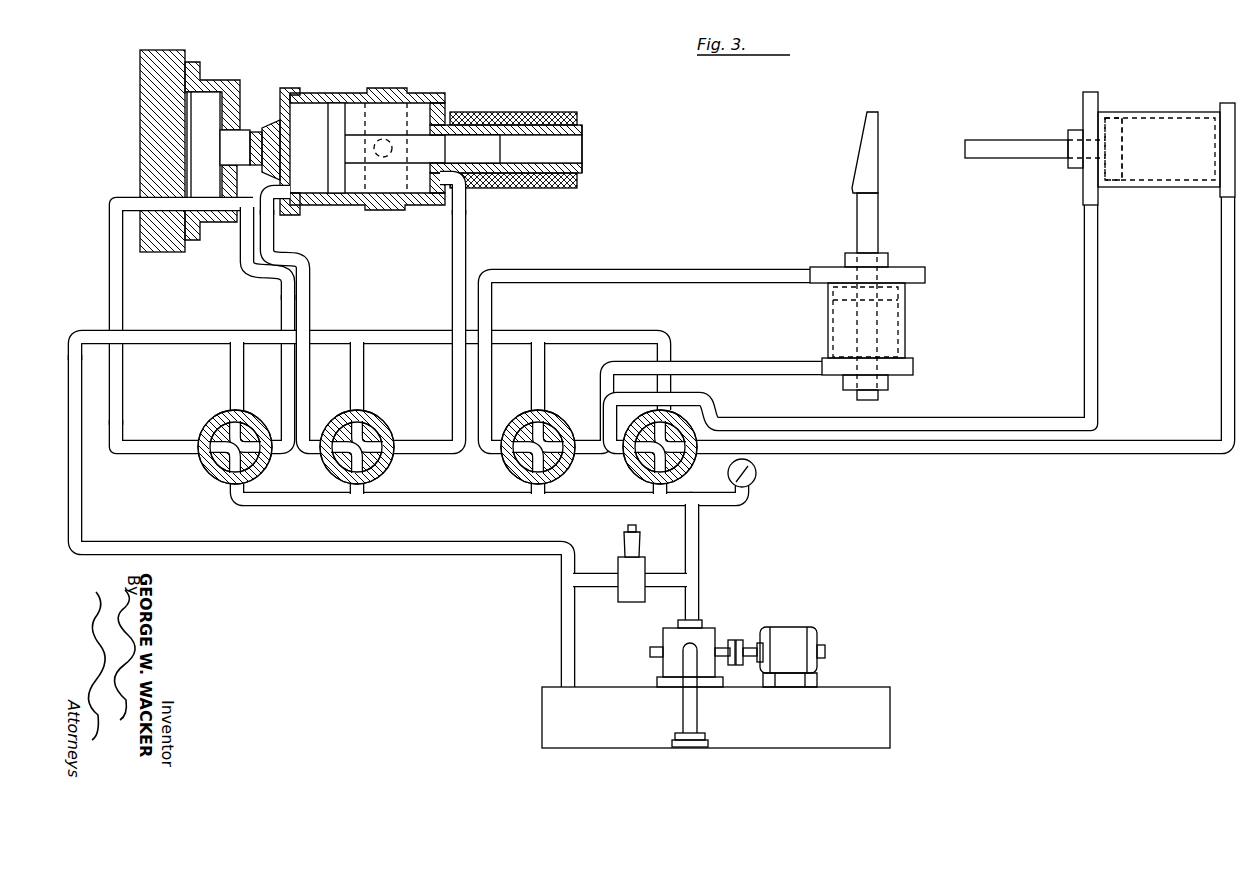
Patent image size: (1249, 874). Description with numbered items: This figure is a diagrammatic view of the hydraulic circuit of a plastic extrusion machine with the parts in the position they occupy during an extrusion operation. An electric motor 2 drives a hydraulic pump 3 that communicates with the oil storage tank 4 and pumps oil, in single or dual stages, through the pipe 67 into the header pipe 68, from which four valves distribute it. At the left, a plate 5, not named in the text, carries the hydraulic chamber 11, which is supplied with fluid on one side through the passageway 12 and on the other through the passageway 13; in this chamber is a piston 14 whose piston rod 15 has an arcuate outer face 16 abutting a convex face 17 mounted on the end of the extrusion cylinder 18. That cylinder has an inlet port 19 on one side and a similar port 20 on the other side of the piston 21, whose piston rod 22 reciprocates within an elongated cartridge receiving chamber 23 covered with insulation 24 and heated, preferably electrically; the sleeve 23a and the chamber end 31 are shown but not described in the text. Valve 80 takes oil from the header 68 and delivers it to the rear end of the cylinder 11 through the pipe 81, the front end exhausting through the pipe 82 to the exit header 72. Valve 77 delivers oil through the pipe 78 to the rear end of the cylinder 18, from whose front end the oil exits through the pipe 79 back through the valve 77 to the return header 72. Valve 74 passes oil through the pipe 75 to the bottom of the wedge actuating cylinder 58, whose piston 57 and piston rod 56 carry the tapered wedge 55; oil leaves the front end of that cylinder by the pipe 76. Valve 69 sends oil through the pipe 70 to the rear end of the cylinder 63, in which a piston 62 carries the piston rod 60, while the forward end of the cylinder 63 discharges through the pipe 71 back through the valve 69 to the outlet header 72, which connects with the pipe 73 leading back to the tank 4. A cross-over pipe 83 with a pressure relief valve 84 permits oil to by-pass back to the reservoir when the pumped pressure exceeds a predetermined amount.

The electric motor 2 is at (810, 627).
The hydraulic pump 3 is at (668, 630).
The oil storage tank 4 is at (852, 692).
The face plate 5 is at (140, 100).
The hydraulic chamber 11 is at (222, 84).
The passageway 12 is at (140, 185).
The passageway 13 is at (224, 220).
The piston 14 is at (218, 106).
The piston rod 15 is at (238, 130).
The arcuate outer face 16 is at (257, 134).
The convex face 17 is at (276, 142).
The extrusion cylinder 18 is at (316, 96).
The inlet port 19 is at (284, 188).
The port 20 is at (438, 180).
The piston 21 is at (340, 102).
The piston rod 22 is at (463, 128).
The cartridge receiving chamber 23 is at (532, 133).
The sleeve 23a is at (492, 118).
The insulation 24 is at (465, 164).
The tube end 31 is at (584, 130).
The tapered wedge 55 is at (876, 134).
The piston rod 56 is at (880, 211).
The piston 57 is at (905, 298).
The wedge actuating cylinder 58 is at (906, 325).
The piston rod 60 is at (1030, 140).
The piston 62 is at (1120, 116).
The cylinder 63 is at (1178, 103).
The pipe 67 is at (699, 541).
The header pipe 68 is at (438, 494).
The valve 69 is at (690, 471).
The pipe 70 is at (1143, 442).
The pipe 71 is at (1099, 286).
The outlet header 72 is at (528, 330).
The pipe 73 is at (446, 552).
The valve 74 is at (574, 473).
The pipe 75 is at (775, 362).
The pipe 76 is at (708, 270).
The valve 77 is at (345, 414).
The pipe 78 is at (311, 288).
The pipe 79 is at (466, 231).
The valve 80 is at (215, 420).
The pipe 81 is at (167, 445).
The pipe 82 is at (246, 276).
The cross-over pipe 83 is at (597, 574).
The pressure relief valve 84 is at (640, 544).